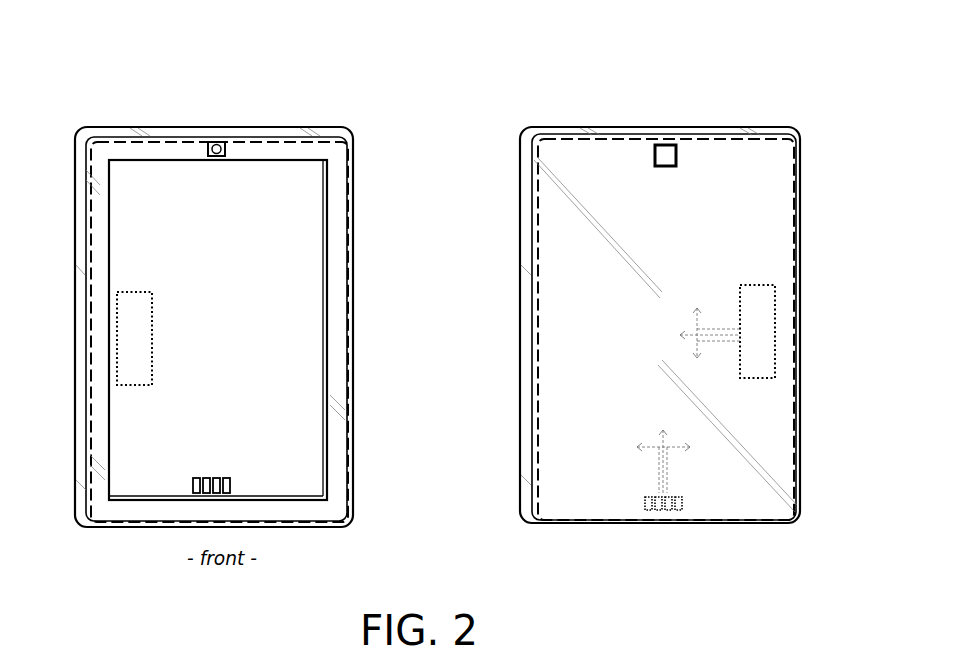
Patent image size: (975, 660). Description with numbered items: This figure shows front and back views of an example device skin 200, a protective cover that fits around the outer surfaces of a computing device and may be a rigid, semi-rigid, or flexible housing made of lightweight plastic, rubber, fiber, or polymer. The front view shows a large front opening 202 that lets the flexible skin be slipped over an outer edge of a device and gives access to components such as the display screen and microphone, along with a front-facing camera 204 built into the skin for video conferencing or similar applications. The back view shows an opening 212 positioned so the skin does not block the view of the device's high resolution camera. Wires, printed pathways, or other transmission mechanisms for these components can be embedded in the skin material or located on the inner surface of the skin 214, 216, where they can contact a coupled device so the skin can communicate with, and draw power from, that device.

The device skin 200 is at (815, 100).
The front opening 202 is at (320, 263).
The front-facing camera 204 is at (216, 142).
The opening on the back of the skin 212 is at (665, 143).
The inner surface of the skin 214 is at (648, 426).
The inner surface of the skin 216 is at (678, 318).